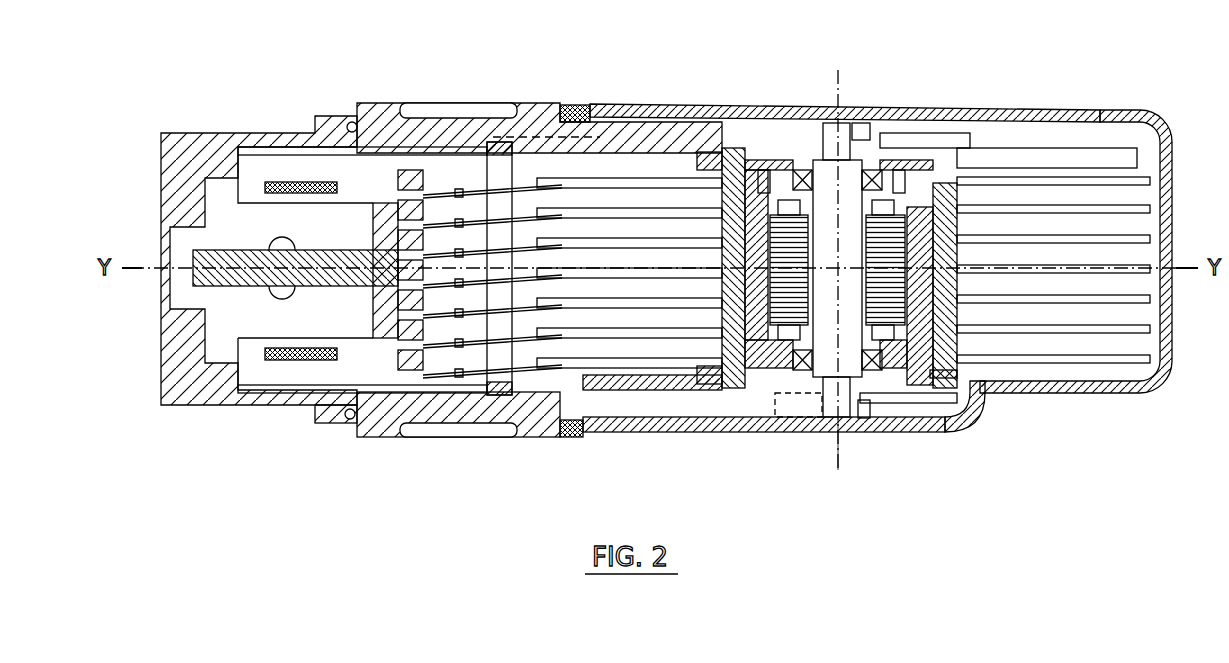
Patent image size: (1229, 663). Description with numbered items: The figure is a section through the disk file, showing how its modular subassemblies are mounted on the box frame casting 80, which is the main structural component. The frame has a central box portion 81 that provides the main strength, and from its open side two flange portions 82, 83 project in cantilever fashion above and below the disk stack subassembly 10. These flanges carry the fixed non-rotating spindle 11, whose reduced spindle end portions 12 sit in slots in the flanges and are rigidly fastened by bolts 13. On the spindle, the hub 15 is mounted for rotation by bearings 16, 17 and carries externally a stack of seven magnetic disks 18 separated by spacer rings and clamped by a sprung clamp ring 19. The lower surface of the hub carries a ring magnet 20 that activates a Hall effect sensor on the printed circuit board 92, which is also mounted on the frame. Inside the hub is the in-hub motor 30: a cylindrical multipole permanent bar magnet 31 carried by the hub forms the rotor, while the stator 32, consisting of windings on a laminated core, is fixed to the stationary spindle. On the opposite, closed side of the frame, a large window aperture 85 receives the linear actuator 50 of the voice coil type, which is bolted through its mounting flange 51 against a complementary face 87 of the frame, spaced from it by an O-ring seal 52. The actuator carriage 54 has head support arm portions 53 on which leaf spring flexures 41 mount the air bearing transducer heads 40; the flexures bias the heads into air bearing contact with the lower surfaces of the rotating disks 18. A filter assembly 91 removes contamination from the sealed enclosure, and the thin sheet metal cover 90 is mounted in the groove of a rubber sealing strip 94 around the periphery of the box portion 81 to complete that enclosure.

The disk stack subassembly 10 is at (966, 371).
The fixed non-rotating spindle 11 is at (857, 420).
The reduced spindle end portions 12 is at (823, 125).
The bolts 13 is at (870, 125).
The hub 15 is at (912, 140).
The bearing 16 is at (797, 170).
The bearing 17 is at (805, 395).
The magnetic disks 18 is at (1090, 237).
The sprung clamp ring 19 is at (735, 150).
The ring magnet 20 is at (965, 395).
The in-hub motor 30 is at (782, 345).
The cylindrical multipole permanent bar magnet 31 is at (918, 290).
The stator 32 is at (885, 342).
The air bearing transducer heads 40 is at (573, 190).
The leaf spring flexures 41 is at (525, 198).
The linear actuator 50 is at (152, 294).
The mounting flange 51 is at (325, 423).
The O-ring seal 52 is at (350, 420).
The head support arm portions 53 is at (437, 200).
The actuator carriage 54 is at (400, 180).
The box frame casting 80 is at (540, 103).
The central box portion 81 is at (447, 103).
The flange portion 82 is at (665, 125).
The flange portion 83 is at (665, 432).
The window aperture 85 is at (358, 127).
The complementary face 87 is at (352, 437).
The cover 90 is at (1132, 108).
The filter assembly 91 is at (1045, 140).
The printed circuit board 92 is at (935, 403).
The rubber sealing strip 94 is at (572, 105).